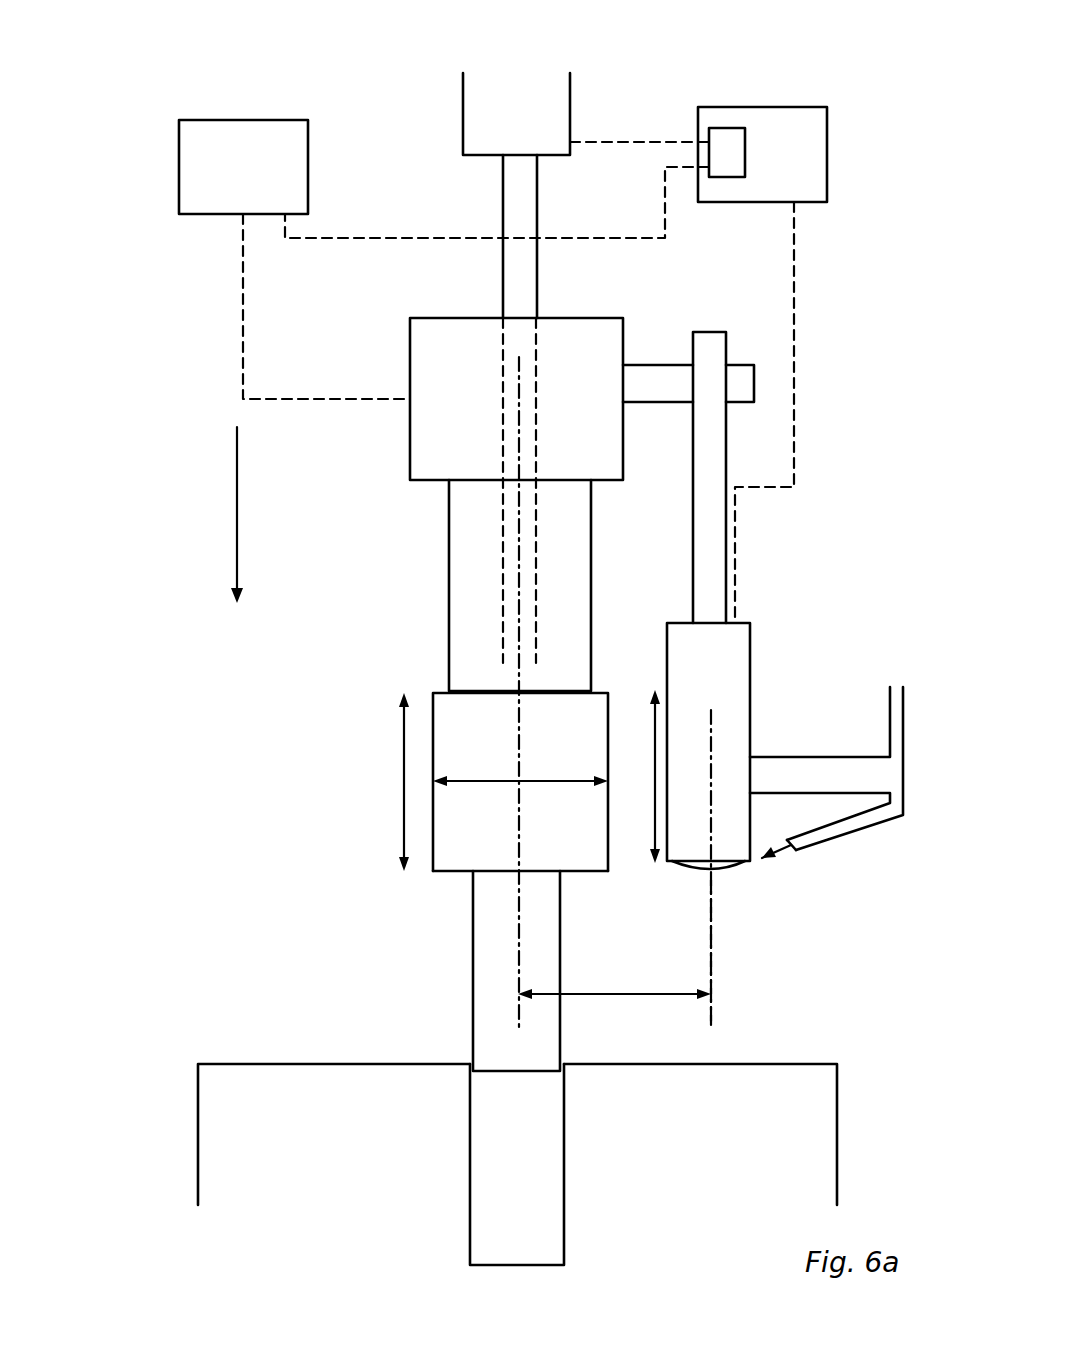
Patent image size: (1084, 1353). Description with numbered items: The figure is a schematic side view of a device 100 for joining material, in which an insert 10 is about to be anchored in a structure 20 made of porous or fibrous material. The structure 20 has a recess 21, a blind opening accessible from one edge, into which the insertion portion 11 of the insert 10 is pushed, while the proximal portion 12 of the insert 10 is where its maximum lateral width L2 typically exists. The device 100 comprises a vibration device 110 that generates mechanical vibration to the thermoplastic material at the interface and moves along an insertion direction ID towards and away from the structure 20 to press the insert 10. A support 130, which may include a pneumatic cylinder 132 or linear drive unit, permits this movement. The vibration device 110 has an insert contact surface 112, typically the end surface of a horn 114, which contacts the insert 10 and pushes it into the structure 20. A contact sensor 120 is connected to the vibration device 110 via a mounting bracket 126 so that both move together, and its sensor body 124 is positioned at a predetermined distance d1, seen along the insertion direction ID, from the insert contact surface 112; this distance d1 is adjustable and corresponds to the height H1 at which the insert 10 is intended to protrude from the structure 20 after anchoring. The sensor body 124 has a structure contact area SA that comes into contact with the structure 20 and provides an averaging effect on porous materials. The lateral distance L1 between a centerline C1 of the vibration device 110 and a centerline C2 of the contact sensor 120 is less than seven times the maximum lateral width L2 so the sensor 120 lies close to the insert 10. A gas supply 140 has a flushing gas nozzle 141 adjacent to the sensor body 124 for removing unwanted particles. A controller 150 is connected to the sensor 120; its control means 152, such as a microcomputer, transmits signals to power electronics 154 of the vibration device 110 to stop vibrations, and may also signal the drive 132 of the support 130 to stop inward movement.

The insert 10 is at (463, 882).
The insertion portion 11 is at (478, 973).
The proximal portion 12 is at (462, 852).
The structure 20 is at (212, 1095).
The recess 21 is at (536, 1177).
The device for joining material 100 is at (817, 322).
The vibration device 110 is at (449, 600).
The insert contact surface 112 is at (477, 694).
The horn 114 is at (463, 632).
The sensor 120 is at (750, 665).
The sensor body 124 is at (717, 870).
The mounting bracket 126 is at (652, 362).
The support 130 is at (538, 213).
The pneumatic cylinder 132 is at (463, 93).
The gas supply 140 is at (890, 742).
The flushing gas nozzle 141 is at (790, 850).
The controller 150 is at (778, 107).
The control means 152 is at (730, 128).
The power electronics 154 is at (179, 178).
The insertion direction ID is at (237, 470).
The centerline of the vibration device C1 is at (519, 515).
The centerline of the contact sensor C2 is at (711, 745).
The structure contact area SA is at (712, 872).
The height H1 is at (388, 782).
The maximum lateral width L2 is at (520, 771).
The lateral distance L1 is at (614, 981).
The predetermined distance d1 is at (640, 776).